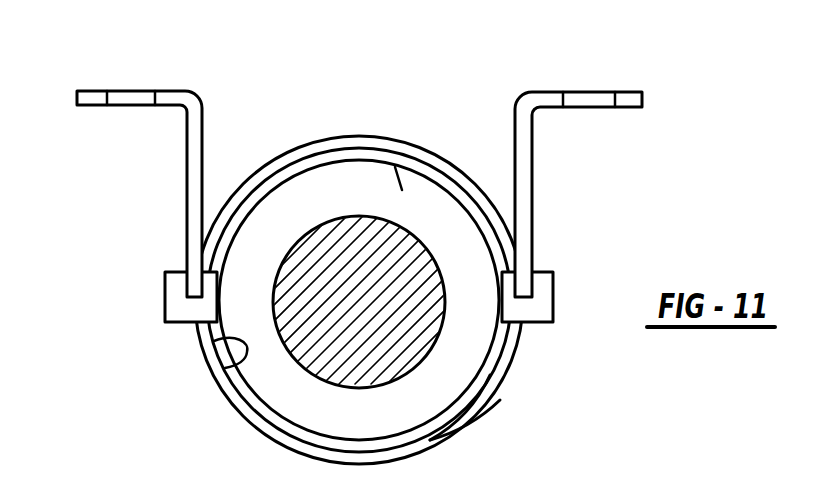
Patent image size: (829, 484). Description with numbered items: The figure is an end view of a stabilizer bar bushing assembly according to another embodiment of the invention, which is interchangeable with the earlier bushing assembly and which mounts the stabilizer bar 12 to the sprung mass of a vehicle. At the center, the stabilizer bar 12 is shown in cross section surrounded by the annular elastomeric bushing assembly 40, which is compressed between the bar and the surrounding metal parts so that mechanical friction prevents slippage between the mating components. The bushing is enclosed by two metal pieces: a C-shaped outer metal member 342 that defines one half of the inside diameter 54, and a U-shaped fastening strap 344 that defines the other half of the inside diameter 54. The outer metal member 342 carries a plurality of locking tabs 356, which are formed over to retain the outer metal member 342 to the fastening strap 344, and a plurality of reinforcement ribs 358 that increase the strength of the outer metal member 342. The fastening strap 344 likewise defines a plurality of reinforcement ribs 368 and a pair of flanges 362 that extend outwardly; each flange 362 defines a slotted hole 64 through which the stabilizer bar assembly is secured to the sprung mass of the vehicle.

The stabilizer bar 12 is at (338, 247).
The elastomeric bushing assembly 40 is at (433, 393).
The inside diameter 54 is at (402, 190).
The slotted hole 64 is at (112, 93).
The outer metal member 342 is at (383, 155).
The fastening strap 344 is at (275, 415).
The locking tabs 356 is at (165, 298).
The reinforcement ribs 358 is at (283, 152).
The flanges 362 is at (77, 105).
The reinforcement ribs 368 is at (460, 437).